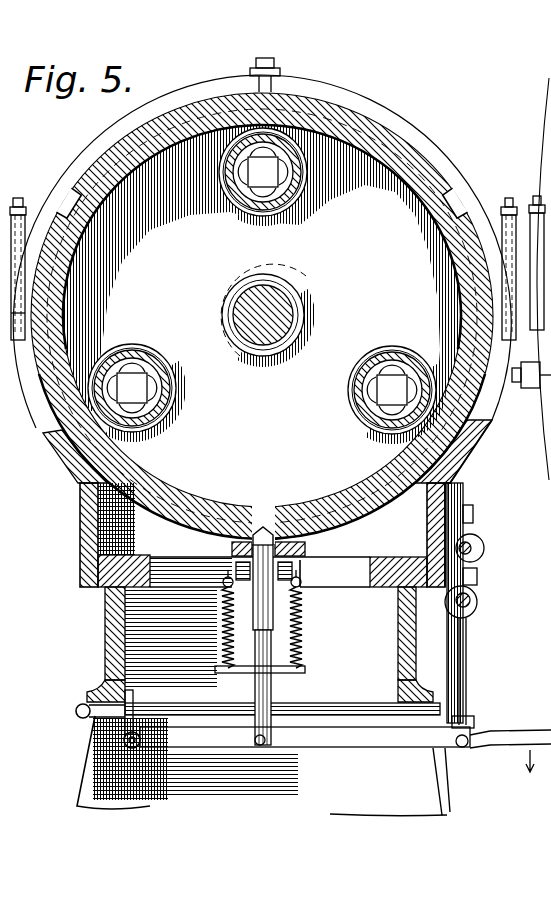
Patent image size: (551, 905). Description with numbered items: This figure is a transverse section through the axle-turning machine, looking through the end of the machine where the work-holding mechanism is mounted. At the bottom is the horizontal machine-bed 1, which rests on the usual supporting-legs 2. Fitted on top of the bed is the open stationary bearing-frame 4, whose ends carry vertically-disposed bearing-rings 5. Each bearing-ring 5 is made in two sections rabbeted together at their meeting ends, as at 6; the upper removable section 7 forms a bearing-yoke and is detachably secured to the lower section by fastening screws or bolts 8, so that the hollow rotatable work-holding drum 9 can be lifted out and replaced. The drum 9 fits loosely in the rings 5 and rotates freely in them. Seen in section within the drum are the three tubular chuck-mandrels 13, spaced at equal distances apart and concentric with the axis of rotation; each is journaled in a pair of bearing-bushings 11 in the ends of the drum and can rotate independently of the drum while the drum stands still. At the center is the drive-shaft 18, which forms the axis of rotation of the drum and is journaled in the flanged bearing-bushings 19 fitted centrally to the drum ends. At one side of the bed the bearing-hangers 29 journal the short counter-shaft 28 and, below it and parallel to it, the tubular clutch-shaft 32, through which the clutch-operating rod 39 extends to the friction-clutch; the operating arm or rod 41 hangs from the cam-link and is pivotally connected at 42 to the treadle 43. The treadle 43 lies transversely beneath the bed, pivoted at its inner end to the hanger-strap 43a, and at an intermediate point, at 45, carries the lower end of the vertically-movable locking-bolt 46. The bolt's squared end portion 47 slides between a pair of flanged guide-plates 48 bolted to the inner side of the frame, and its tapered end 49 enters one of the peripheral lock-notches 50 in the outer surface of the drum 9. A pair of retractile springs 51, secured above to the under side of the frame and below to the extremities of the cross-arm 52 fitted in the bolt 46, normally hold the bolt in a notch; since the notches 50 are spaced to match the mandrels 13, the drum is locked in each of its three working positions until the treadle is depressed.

The machine-bed 1 is at (263, 651).
The supporting-legs 2 is at (263, 766).
The bearing-frame 4 is at (80, 545).
The bearing-rings 5 is at (516, 378).
The rabbeted joint 6 is at (550, 327).
The upper removable section 7 is at (407, 98).
The fastening screws or bolts 8 is at (21, 190).
The rotatable work-holding drum 9 is at (408, 180).
The bearing-bushings 11 is at (240, 204).
The tubular chuck-mandrels 13 is at (259, 224).
The central drive-shaft 18 is at (292, 297).
The flanged bearing-bushings 19 is at (232, 298).
The counter-shaft 28 is at (485, 549).
The bearing-hangers 29 is at (470, 532).
The tubular clutch-shaft 32 is at (478, 607).
The clutch-operating rod 39 is at (471, 598).
The operating arm or rod 41 is at (467, 668).
The pivotal connection 42 is at (470, 722).
The treadle 43 is at (400, 748).
The hanger-strap 43a is at (78, 714).
The pivotal attachment 45 is at (255, 741).
The locking-bolt 46 is at (272, 694).
The squared end portion 47 is at (256, 598).
The guide-plates 48 is at (224, 590).
The tapered end 49 is at (266, 524).
The lock-notches 50 is at (66, 204).
The retractile springs 51 is at (224, 636).
The cross-arm 52 is at (236, 673).